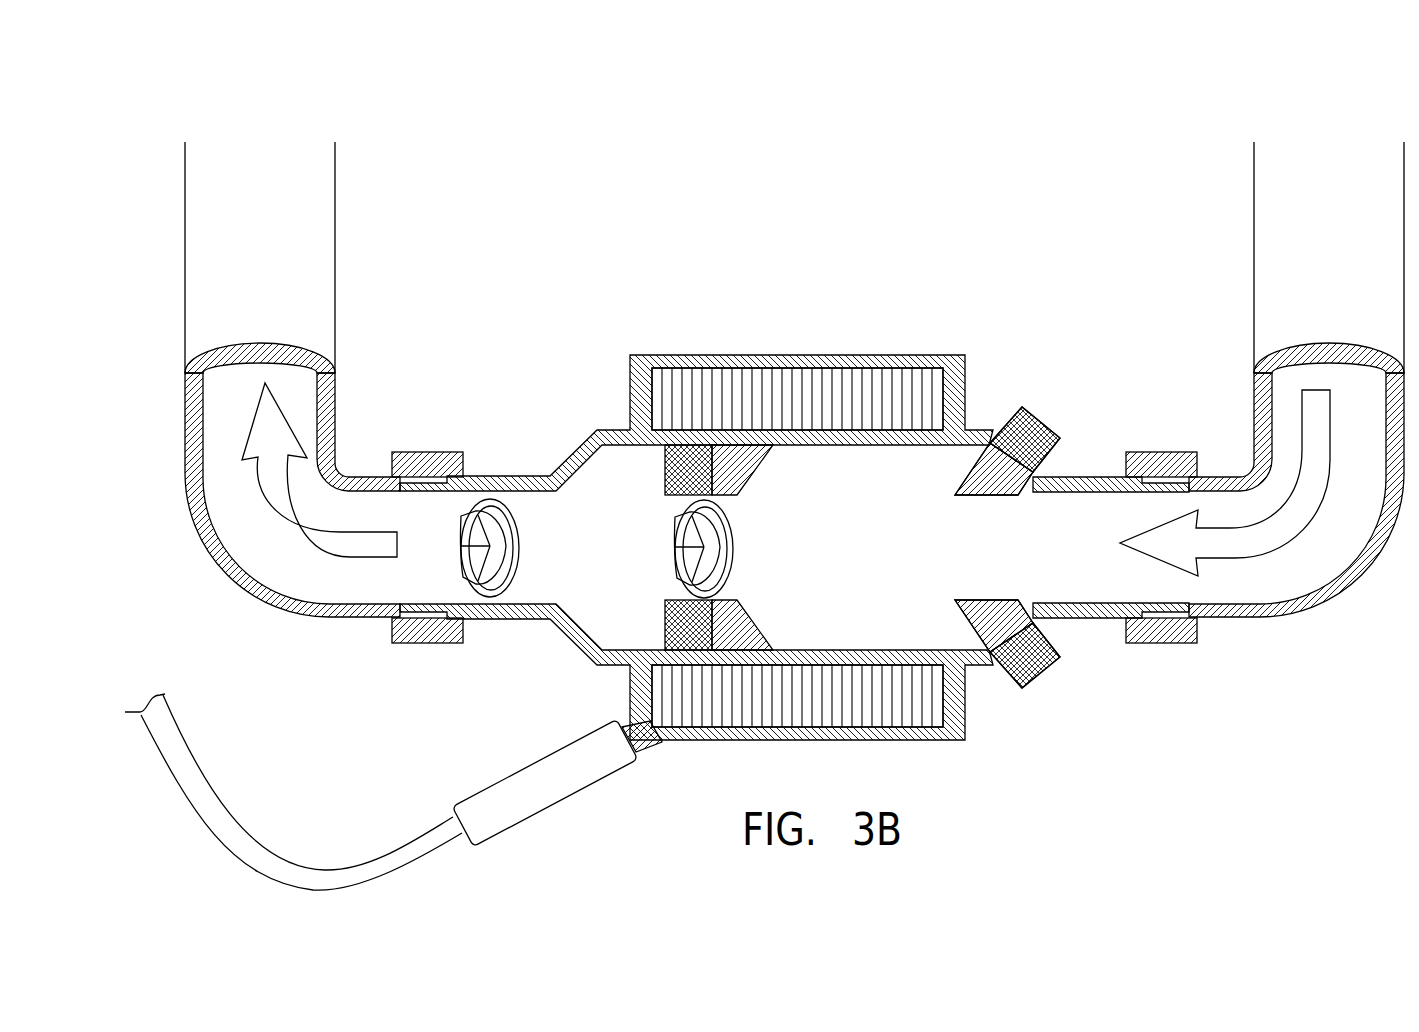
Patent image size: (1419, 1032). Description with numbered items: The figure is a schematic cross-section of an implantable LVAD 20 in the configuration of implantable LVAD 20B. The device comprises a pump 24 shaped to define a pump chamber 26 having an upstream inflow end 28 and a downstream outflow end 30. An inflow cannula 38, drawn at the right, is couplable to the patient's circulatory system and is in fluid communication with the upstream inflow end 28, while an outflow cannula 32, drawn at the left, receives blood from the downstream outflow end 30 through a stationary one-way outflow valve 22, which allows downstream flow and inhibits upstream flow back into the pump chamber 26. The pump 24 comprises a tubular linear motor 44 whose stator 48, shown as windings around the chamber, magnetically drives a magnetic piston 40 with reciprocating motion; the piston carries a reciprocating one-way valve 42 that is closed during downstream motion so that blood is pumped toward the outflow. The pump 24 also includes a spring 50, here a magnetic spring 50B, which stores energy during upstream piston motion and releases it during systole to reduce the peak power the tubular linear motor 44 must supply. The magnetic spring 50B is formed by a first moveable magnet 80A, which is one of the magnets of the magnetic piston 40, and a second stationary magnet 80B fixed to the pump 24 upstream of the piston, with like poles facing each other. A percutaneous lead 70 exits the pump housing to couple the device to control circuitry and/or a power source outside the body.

The LVAD 20 is at (462, 116).
The implantable LVAD 20B is at (768, 516).
The stationary one-way outflow valve 22 is at (500, 491).
The pump 24 is at (1000, 312).
The pump chamber 26 is at (641, 551).
The upstream inflow end 28 is at (1206, 594).
The downstream outflow end 30 is at (404, 582).
The outflow cannula 32 is at (322, 278).
The inflow cannula 38 is at (1355, 573).
The magnetic piston 40 is at (658, 505).
The reciprocating one-way valve 42 is at (676, 565).
The tubular linear motor 44 is at (1006, 379).
The stator 48 is at (753, 385).
The spring 50 is at (958, 483).
The magnetic spring 50B is at (862, 451).
The percutaneous lead 70 is at (533, 802).
The first moveable magnet 80A is at (743, 610).
The second stationary magnet 80B is at (958, 612).